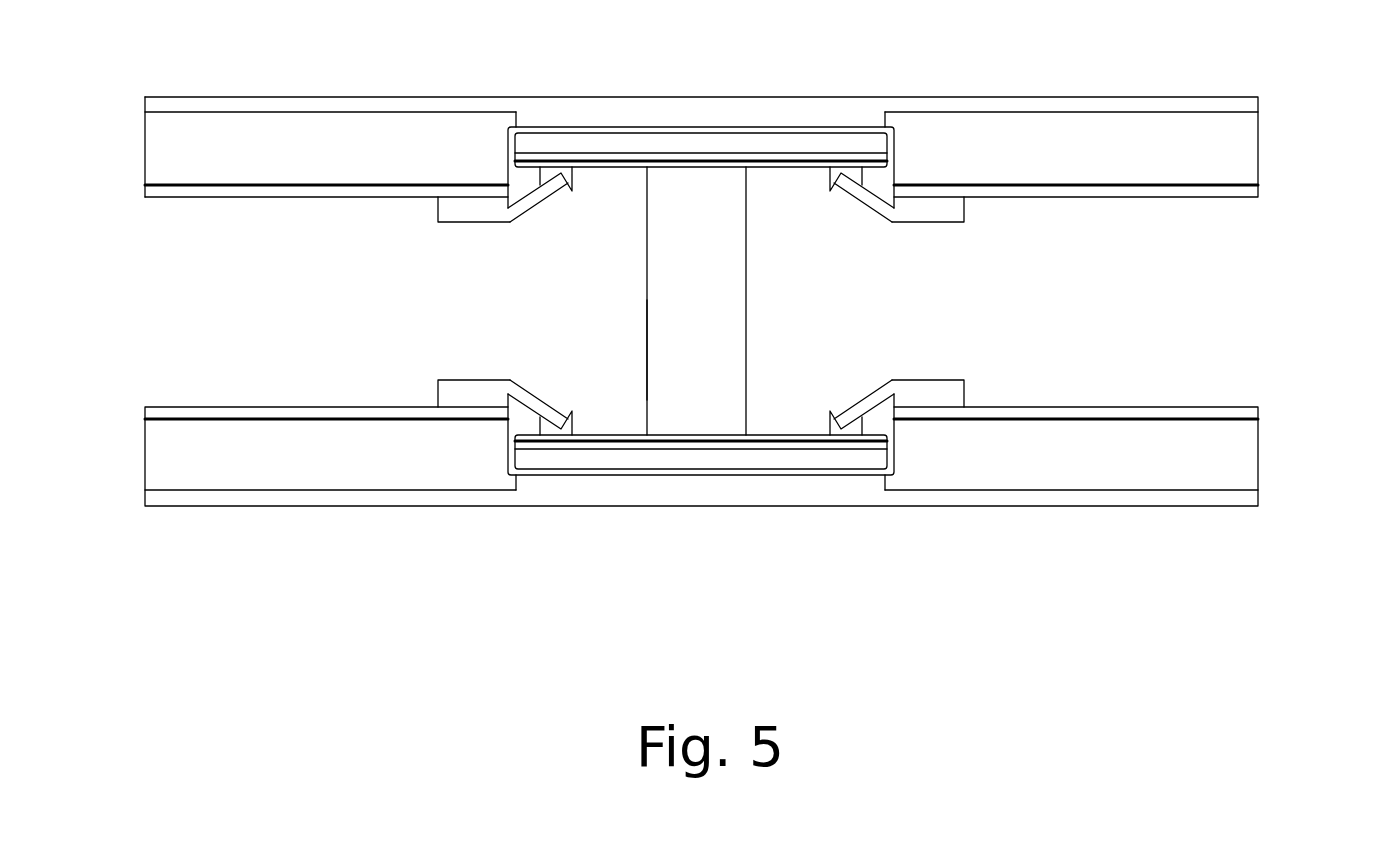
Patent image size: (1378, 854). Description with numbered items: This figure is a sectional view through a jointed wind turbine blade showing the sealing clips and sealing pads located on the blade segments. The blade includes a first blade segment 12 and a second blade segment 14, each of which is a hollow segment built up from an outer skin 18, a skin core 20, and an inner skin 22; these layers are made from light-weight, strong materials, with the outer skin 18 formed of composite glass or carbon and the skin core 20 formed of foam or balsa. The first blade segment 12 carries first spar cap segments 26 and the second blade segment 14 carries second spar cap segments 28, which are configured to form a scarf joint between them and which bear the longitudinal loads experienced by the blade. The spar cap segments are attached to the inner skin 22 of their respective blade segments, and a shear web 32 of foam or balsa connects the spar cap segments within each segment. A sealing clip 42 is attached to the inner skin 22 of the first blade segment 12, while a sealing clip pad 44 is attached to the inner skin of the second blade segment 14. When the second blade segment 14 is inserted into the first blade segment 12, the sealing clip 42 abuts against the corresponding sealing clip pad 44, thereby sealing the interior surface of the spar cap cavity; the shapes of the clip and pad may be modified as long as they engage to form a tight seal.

The first blade segment 12 is at (1130, 95).
The second blade segment 14 is at (748, 320).
The outer skin 18 is at (1258, 105).
The skin core 20 is at (1258, 145).
The inner skin 22 is at (1185, 200).
The first spar cap segments 26 is at (602, 122).
The second spar cap segments 28 is at (733, 140).
The shear web 32 is at (648, 352).
The sealing clip 42 is at (438, 215).
The sealing clip pad 44 is at (574, 190).